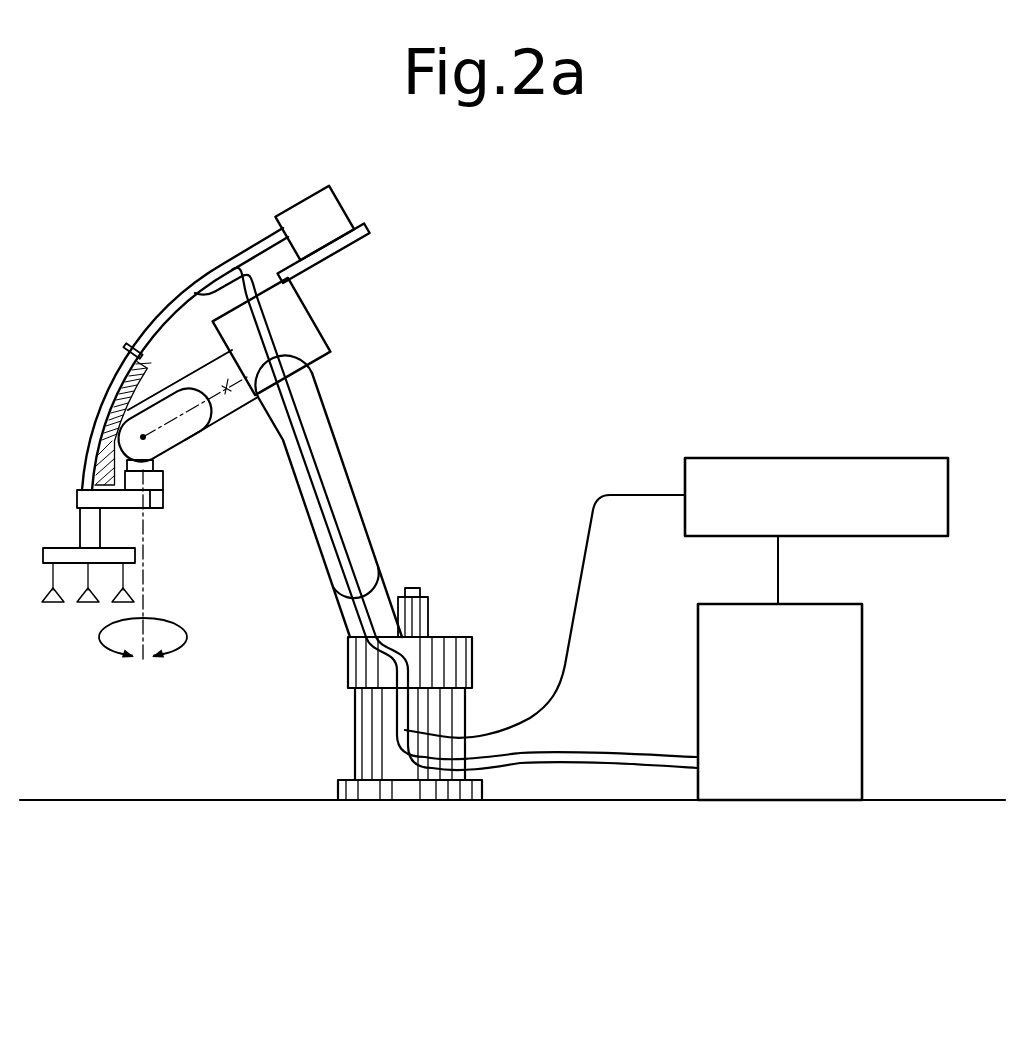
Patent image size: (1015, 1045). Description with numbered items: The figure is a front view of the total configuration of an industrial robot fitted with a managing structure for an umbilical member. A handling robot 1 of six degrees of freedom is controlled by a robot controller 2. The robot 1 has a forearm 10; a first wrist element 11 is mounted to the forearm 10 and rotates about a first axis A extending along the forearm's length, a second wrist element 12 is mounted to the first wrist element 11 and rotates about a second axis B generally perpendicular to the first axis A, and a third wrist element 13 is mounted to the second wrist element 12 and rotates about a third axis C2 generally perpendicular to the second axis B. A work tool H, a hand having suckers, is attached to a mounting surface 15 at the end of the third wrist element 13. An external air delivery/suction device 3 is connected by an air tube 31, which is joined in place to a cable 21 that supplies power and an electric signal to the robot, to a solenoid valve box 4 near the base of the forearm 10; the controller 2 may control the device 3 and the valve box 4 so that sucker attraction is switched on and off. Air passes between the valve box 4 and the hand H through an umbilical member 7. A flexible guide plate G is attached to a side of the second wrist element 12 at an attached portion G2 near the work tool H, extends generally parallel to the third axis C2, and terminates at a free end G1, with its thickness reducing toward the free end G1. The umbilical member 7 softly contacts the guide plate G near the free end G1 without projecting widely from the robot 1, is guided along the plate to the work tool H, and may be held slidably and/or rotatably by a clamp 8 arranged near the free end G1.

The handling robot 1 is at (340, 466).
The robot controller 2 is at (882, 687).
The external air delivery/suction device 3 is at (841, 428).
The solenoid valve box 4 is at (328, 210).
The umbilical member 7 is at (199, 266).
The clamp 8 is at (124, 336).
The forearm 10 is at (305, 336).
The first wrist element 11 is at (192, 428).
The second wrist element 12 is at (165, 484).
The third wrist element 13 is at (165, 499).
The mounting surface 15 is at (160, 515).
The cable 21 is at (636, 752).
The air tube 31 is at (585, 558).
The first axis A is at (237, 408).
The second axis B is at (158, 458).
The guide plate G is at (105, 440).
The free end G1 is at (157, 358).
The attached portion G2 is at (102, 463).
The work tool H is at (54, 617).
The third axis C2 is at (143, 584).